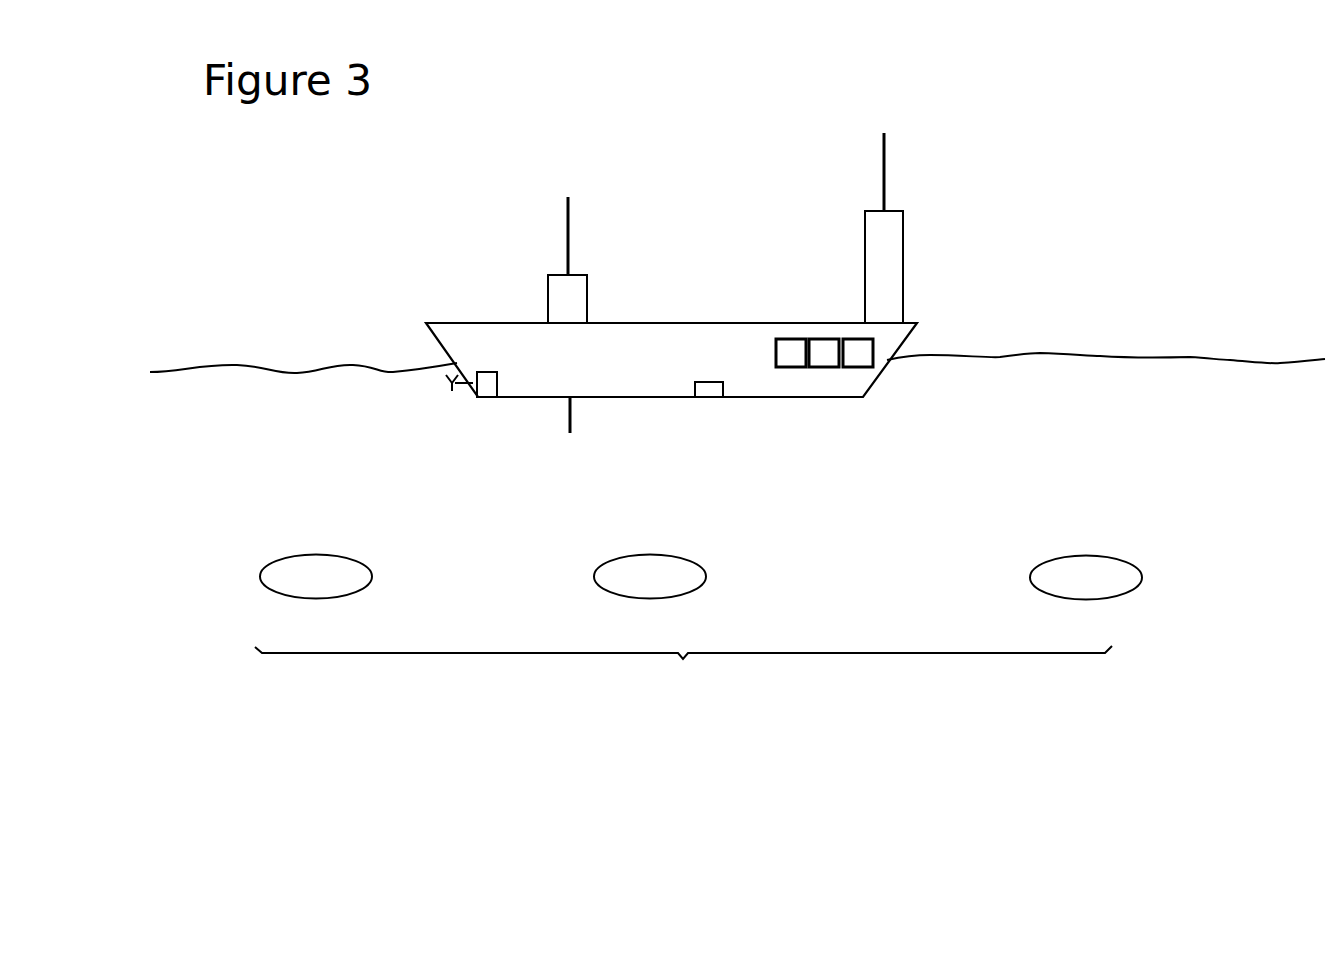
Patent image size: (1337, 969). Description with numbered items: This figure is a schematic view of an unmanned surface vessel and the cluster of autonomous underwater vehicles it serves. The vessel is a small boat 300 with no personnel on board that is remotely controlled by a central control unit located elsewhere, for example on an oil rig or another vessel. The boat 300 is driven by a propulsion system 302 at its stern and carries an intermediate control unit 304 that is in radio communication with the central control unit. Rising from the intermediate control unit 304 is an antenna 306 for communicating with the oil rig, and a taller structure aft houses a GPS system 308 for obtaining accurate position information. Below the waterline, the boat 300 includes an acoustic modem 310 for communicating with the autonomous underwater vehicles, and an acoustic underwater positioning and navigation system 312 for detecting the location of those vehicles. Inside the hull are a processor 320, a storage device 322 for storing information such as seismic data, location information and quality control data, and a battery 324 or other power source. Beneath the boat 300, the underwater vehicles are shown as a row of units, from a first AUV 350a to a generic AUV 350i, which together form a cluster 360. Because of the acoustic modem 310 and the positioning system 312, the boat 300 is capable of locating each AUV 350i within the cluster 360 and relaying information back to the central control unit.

The boat 300 is at (712, 318).
The propulsion system 302 is at (468, 410).
The intermediate control unit 304 is at (548, 300).
The antenna 306 is at (570, 218).
The GPS system 308 is at (886, 165).
The acoustic modem 310 is at (710, 397).
The acoustic underwater positioning and navigation (AUPN) system 312 is at (573, 417).
The processor 320 is at (790, 352).
The storage device 322 is at (827, 352).
The battery 324 is at (863, 352).
The AUV 350a is at (348, 595).
The AUV 350i is at (683, 595).
The cluster 360 is at (683, 669).